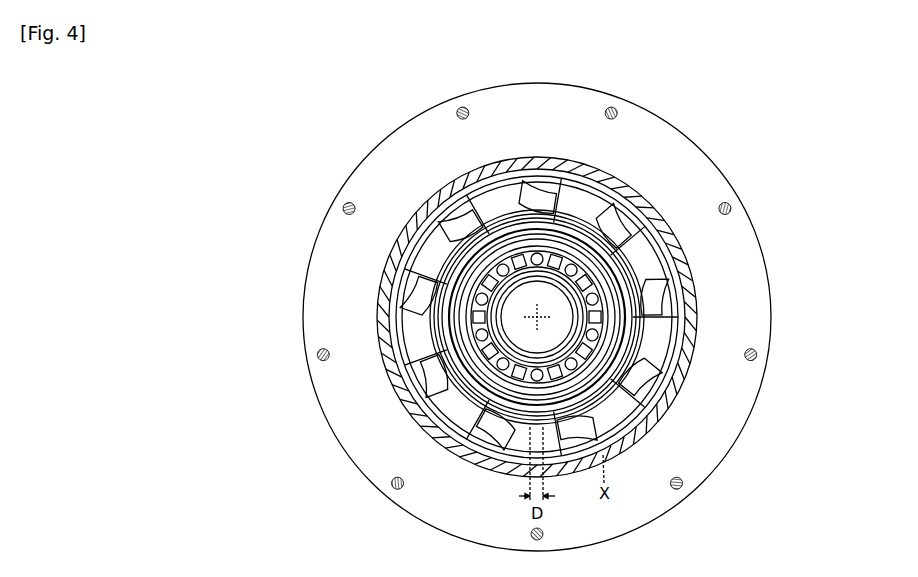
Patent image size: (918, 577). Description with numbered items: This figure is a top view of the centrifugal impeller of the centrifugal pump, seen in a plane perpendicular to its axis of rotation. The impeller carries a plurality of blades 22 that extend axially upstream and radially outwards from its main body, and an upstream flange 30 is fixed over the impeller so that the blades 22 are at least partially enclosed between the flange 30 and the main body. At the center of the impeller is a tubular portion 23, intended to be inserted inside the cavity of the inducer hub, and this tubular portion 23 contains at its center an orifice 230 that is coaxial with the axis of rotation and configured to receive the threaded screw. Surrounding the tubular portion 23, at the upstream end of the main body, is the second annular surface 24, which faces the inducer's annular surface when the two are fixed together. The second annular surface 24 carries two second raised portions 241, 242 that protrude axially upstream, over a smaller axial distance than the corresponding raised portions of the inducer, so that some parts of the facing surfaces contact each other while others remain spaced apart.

The blades 22 is at (410, 333).
The tubular portion 23 is at (447, 198).
The orifice 230 is at (527, 260).
The second annular surface 24 is at (583, 212).
The second raised portion 241 is at (450, 265).
The second raised portion 242 is at (630, 280).
The upstream flange 30 is at (684, 167).